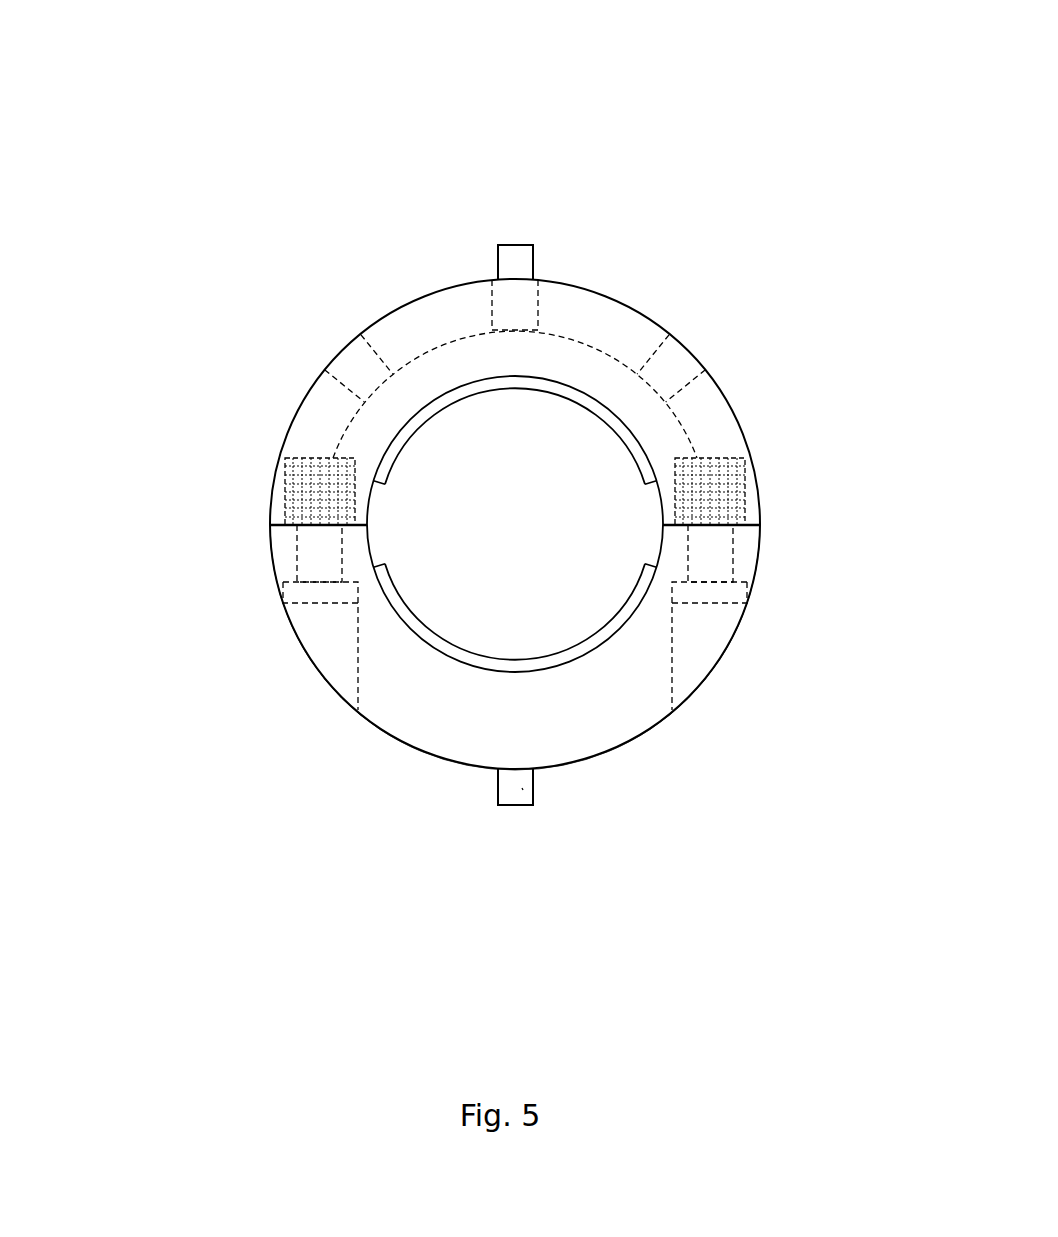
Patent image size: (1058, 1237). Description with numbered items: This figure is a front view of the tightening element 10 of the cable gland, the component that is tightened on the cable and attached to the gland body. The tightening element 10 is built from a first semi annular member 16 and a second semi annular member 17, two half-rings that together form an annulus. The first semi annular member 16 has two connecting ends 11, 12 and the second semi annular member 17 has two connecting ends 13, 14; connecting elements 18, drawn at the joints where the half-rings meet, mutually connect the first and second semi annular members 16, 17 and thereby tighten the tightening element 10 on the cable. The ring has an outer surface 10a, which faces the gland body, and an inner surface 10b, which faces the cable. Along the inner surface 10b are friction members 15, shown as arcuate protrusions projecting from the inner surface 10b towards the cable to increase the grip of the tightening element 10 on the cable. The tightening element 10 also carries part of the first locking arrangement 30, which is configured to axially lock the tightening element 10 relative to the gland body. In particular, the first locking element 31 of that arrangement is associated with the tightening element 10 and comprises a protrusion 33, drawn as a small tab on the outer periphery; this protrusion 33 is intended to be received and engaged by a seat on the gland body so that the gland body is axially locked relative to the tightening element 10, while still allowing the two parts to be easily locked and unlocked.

The tightening element 10 is at (279, 224).
The outer surface 10a is at (441, 277).
The inner surface 10b is at (385, 500).
The connecting end 11 is at (748, 520).
The connecting end 12 is at (273, 527).
The connecting end 13 is at (680, 527).
The connecting end 14 is at (357, 528).
The friction members 15 is at (590, 397).
The first semi annular member 16 is at (567, 305).
The second semi annular member 17 is at (465, 757).
The connecting elements 18 is at (711, 466).
The first locking arrangement 30 is at (513, 228).
The first locking element 31 is at (508, 802).
The protrusion 33 is at (522, 790).